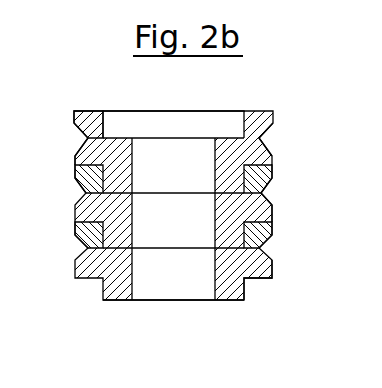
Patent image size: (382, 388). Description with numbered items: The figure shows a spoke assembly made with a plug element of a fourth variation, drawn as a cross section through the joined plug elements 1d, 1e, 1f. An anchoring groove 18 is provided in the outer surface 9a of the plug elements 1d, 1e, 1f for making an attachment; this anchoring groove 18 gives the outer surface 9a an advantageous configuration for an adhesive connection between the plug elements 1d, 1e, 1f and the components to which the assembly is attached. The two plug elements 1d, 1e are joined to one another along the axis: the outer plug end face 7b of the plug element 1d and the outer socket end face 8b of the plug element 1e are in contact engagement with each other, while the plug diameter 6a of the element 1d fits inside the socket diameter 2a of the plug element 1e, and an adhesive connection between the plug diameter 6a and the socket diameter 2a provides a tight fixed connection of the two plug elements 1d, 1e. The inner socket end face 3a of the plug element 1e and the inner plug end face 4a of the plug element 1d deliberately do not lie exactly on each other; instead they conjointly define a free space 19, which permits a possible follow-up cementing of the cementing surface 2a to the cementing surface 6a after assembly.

The inner socket end face 3a is at (232, 138).
The outer socket end face 8b is at (112, 102).
The anchoring groove 18 is at (80, 138).
The outer surface 9a is at (75, 172).
The free space 19 is at (84, 201).
The plug diameter 6a is at (215, 178).
The plug element 1d is at (263, 137).
The plug element 1e is at (263, 188).
The socket diameter 2a is at (268, 199).
The plug element 1f is at (263, 234).
The outer plug end face 7b is at (258, 279).
The inner plug end face 4a is at (218, 301).